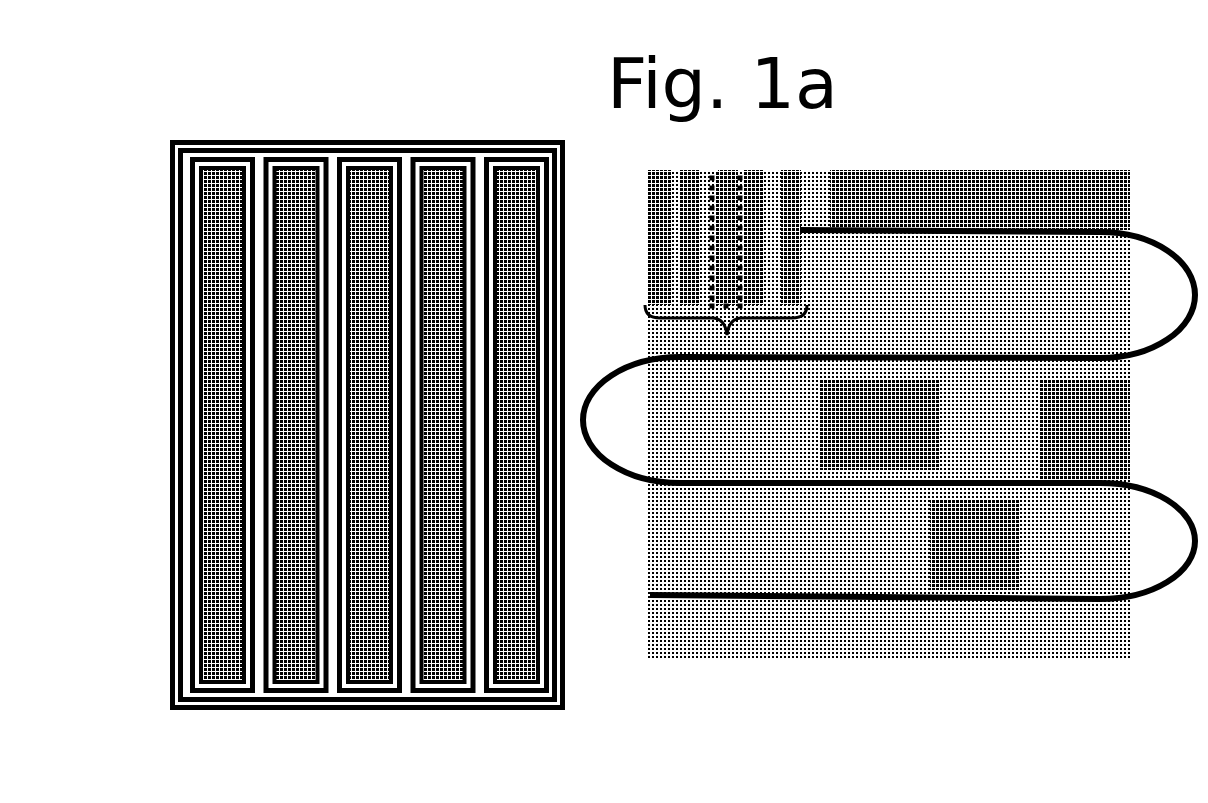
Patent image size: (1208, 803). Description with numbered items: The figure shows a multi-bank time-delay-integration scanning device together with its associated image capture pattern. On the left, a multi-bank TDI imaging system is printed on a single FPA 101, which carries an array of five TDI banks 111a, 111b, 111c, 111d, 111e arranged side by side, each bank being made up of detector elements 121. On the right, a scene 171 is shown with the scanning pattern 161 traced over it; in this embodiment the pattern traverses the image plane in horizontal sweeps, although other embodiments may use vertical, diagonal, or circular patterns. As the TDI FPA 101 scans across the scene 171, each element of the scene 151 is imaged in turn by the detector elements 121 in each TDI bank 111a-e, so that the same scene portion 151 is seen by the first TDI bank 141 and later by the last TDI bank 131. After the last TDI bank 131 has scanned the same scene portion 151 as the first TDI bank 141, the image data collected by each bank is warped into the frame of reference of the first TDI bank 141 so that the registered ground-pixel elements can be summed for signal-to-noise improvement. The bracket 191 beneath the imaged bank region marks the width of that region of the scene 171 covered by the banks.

The FPA 101 is at (303, 710).
The TDI bank 111a is at (228, 166).
The TDI bank 111b is at (314, 160).
The TDI bank 111c is at (392, 690).
The TDI bank 111d is at (465, 690).
The TDI bank 111e is at (537, 165).
The detector elements 121 is at (243, 166).
The last TDI bank 131 is at (680, 178).
The first TDI bank 141 is at (717, 180).
The element of the scene 151 is at (728, 178).
The scanning pattern 161 is at (638, 480).
The scene 171 is at (675, 660).
The field of view width 191 is at (722, 336).